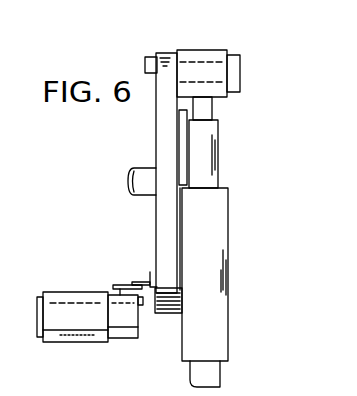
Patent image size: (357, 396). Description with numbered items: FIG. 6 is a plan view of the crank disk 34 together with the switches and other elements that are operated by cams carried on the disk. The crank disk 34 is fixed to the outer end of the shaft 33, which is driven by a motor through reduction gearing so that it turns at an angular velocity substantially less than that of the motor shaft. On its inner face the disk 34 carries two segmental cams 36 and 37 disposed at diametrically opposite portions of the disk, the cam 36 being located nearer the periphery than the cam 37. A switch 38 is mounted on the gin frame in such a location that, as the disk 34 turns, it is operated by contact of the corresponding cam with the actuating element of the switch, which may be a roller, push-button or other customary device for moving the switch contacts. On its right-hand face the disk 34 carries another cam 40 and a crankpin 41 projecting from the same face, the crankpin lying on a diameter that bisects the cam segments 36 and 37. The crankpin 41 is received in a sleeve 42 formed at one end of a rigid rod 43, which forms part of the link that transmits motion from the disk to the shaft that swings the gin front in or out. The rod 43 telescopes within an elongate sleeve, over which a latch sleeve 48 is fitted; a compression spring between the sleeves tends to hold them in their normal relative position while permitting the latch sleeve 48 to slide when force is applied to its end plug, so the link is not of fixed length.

The shaft 33 is at (141, 194).
The crank disk 34 is at (157, 250).
The segmental cam 36 is at (146, 62).
The segmental cam 37 is at (150, 272).
The switch 38 is at (64, 300).
The cam 40 is at (183, 117).
The crankpin 41 is at (205, 60).
The sleeve 42 is at (200, 62).
The rigid rod 43 is at (208, 110).
The latch sleeve 48 is at (213, 213).